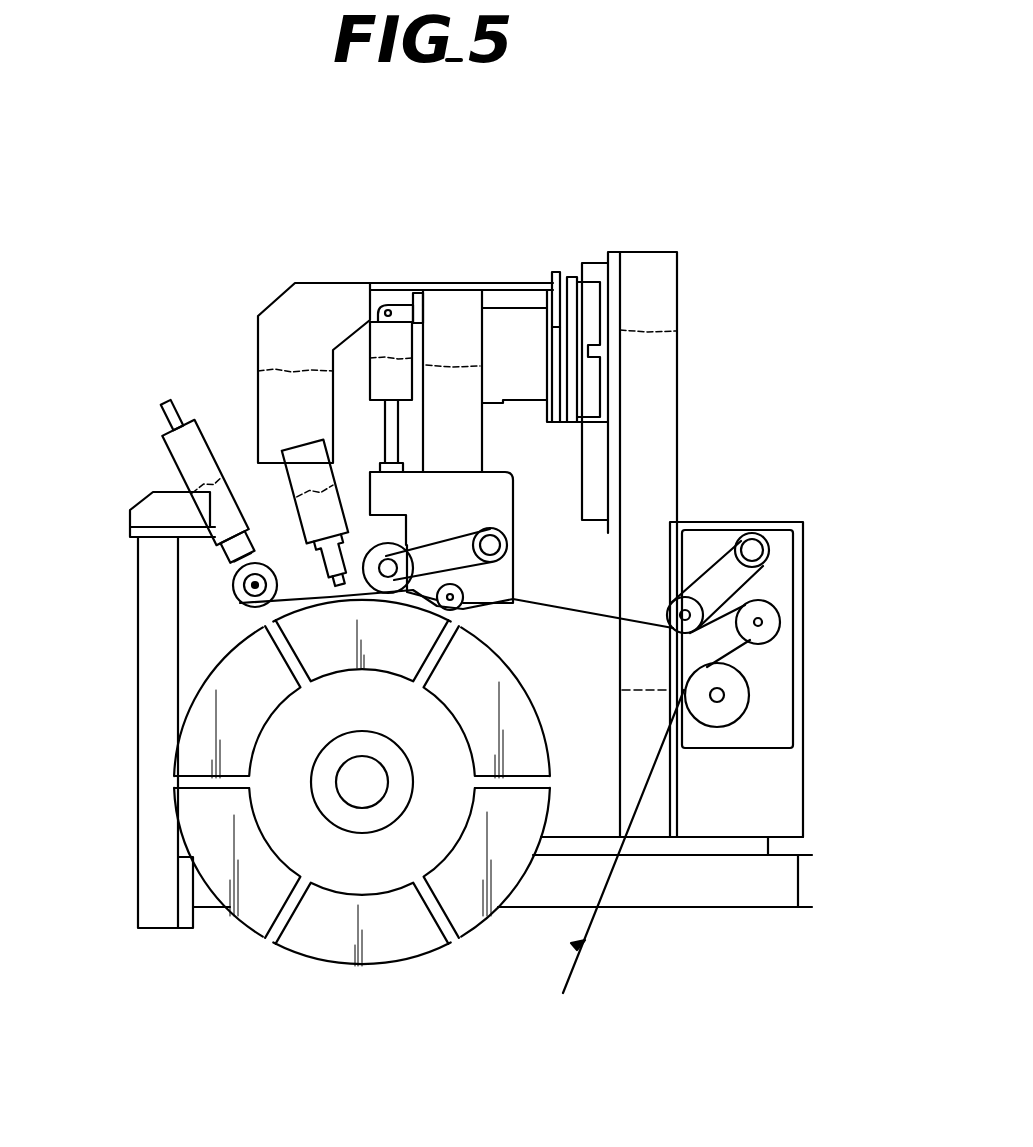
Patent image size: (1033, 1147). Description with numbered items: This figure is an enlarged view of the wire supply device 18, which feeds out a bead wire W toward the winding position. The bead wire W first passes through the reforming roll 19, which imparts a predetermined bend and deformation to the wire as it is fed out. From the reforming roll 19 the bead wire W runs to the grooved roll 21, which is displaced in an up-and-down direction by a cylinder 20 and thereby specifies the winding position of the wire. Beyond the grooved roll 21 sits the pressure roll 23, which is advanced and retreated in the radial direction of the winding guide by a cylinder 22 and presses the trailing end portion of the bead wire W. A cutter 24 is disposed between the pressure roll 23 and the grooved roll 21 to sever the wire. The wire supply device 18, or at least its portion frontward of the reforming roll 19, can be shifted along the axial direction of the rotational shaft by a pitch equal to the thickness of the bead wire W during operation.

The wire supply device 18 is at (695, 430).
The reforming roll 19 is at (770, 610).
The cylinder 20 is at (382, 340).
The grooved roll 21 is at (373, 543).
The cylinder 22 is at (170, 450).
The pressure roll 23 is at (233, 594).
The cutter 24 is at (314, 558).
The bead wire W is at (577, 613).